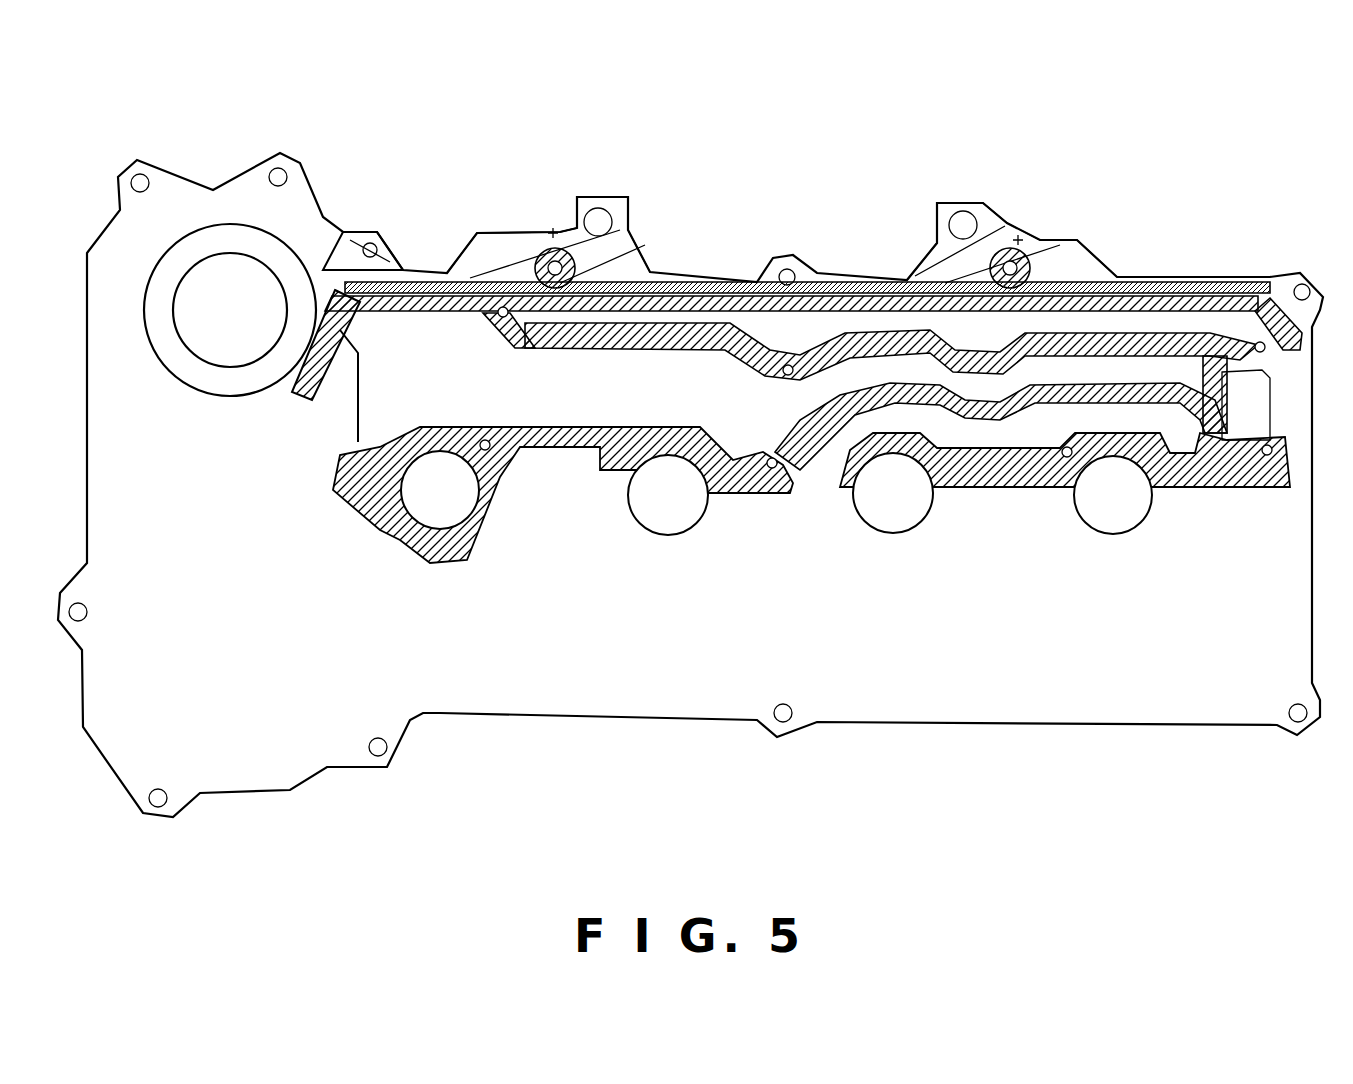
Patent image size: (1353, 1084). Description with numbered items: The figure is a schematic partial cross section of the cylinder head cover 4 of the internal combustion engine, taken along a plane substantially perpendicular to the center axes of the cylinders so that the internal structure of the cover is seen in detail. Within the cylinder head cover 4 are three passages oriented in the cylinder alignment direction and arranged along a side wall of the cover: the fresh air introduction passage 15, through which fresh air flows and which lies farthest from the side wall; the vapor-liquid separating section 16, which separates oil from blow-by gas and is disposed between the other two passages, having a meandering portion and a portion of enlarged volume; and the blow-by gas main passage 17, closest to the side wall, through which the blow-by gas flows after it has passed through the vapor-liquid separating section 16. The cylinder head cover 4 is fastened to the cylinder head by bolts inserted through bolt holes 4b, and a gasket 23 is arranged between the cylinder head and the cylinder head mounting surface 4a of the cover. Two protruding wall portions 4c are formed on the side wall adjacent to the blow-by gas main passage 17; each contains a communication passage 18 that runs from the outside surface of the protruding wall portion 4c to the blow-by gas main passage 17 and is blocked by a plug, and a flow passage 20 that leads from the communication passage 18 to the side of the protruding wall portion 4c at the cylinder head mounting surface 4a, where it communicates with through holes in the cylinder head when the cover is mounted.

The cylinder head cover 4 is at (1256, 258).
The cylinder head mounting surface 4a is at (482, 262).
The bolt holes 4b is at (598, 215).
The protruding wall portions 4c is at (612, 200).
The fresh air introduction passage 15 is at (985, 438).
The vapor-liquid separating section 16 is at (543, 400).
The blow-by gas main passage 17 is at (682, 322).
The communication passage 18 is at (545, 230).
The flow passage 20 is at (545, 266).
The gasket 23 is at (402, 258).